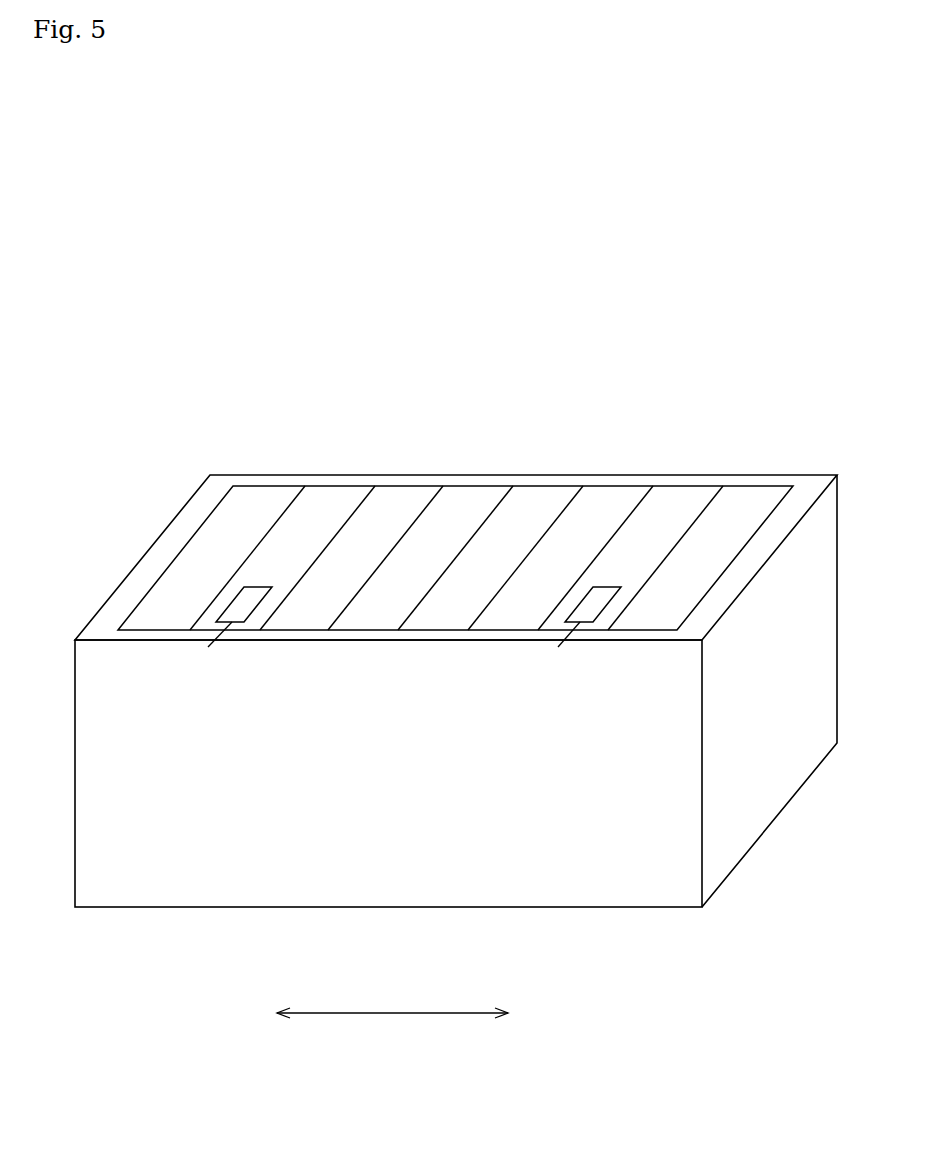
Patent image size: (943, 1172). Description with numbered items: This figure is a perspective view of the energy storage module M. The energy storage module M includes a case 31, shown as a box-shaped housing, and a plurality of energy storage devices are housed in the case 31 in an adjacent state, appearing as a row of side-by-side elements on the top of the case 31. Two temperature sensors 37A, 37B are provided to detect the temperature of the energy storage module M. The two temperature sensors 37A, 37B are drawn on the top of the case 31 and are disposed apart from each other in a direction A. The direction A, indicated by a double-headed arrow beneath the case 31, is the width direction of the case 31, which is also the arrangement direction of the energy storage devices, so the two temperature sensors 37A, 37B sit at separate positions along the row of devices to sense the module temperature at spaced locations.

The case 31 is at (493, 860).
The temperature sensor 37A is at (244, 607).
The temperature sensor 37B is at (593, 607).
The energy storage module M is at (456, 712).
The direction A is at (392, 1001).